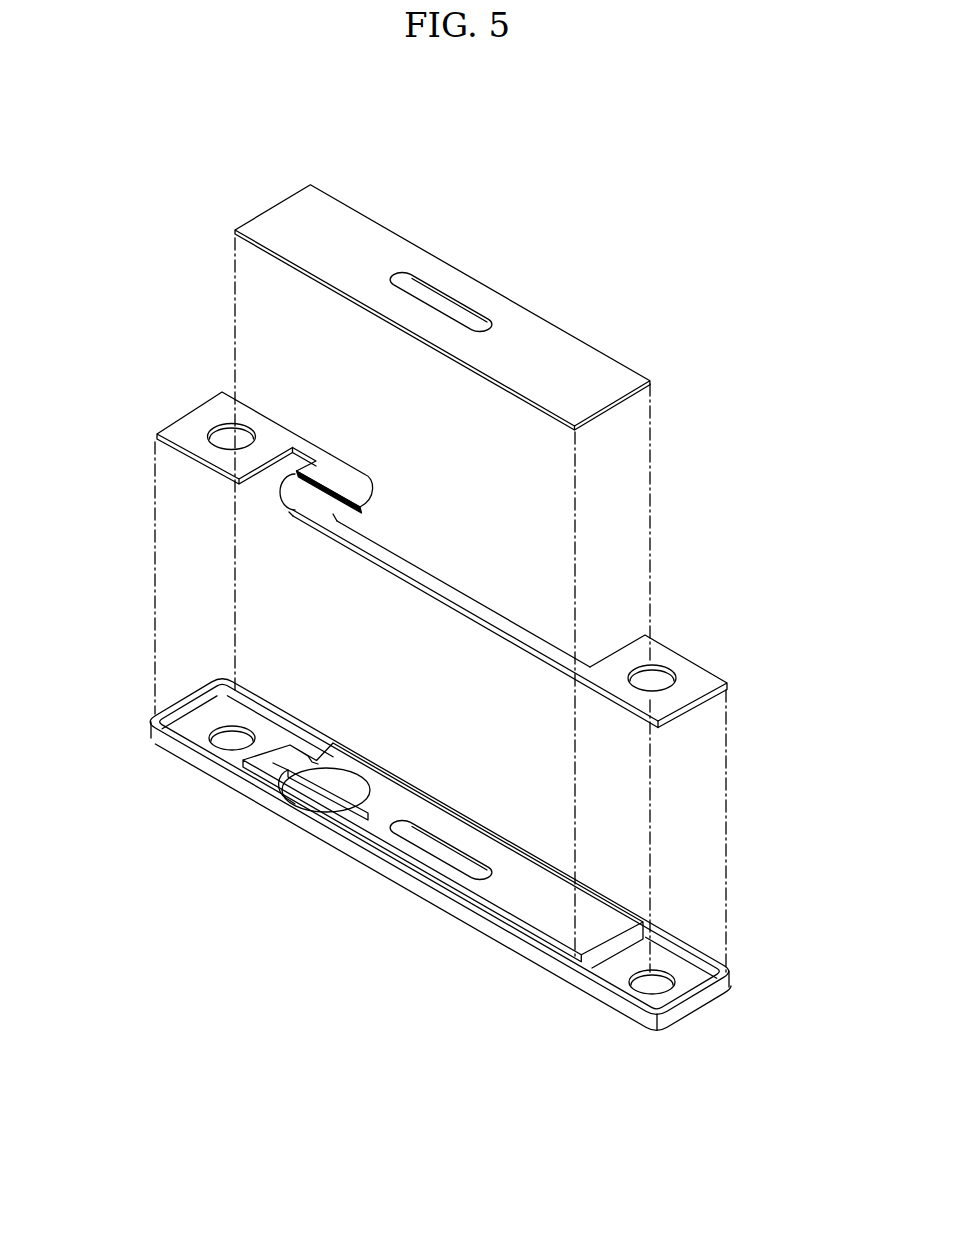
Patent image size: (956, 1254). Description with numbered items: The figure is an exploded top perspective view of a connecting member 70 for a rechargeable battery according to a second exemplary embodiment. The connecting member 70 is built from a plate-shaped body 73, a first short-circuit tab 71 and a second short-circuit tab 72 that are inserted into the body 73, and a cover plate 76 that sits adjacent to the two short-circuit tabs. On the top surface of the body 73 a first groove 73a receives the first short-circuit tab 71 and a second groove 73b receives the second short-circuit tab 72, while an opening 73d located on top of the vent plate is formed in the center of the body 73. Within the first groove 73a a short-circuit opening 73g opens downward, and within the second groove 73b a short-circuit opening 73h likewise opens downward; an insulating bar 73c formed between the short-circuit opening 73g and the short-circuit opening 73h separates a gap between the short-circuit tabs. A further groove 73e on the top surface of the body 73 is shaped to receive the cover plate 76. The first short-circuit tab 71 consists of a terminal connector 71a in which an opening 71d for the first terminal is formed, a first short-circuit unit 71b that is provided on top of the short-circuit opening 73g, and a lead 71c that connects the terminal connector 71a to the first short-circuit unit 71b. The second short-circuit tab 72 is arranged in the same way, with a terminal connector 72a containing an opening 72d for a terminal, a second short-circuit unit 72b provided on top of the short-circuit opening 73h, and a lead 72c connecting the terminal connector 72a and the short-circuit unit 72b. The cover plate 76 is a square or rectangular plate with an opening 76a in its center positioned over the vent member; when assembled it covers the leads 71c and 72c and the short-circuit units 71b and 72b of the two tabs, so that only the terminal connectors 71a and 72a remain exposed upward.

The connecting member 70 is at (540, 270).
The first short-circuit tab 71 is at (539, 601).
The terminal connector 71a is at (698, 680).
The first short-circuit unit 71b is at (303, 495).
The lead 71c is at (403, 567).
The opening 71d is at (660, 668).
The second short-circuit tab 72 is at (255, 429).
The terminal connector 72a is at (175, 430).
The second short-circuit unit 72b is at (353, 487).
The lead 72c is at (313, 452).
The opening 72d is at (204, 442).
The body 73 is at (442, 865).
The first groove 73a is at (688, 983).
The second groove 73b is at (197, 727).
The insulating bar 73c is at (317, 818).
The opening 73d is at (420, 832).
The groove 73e is at (495, 838).
The short-circuit opening 73g is at (297, 798).
The short-circuit opening 73h is at (337, 775).
The cover plate 76 is at (442, 301).
The opening 76a is at (430, 283).